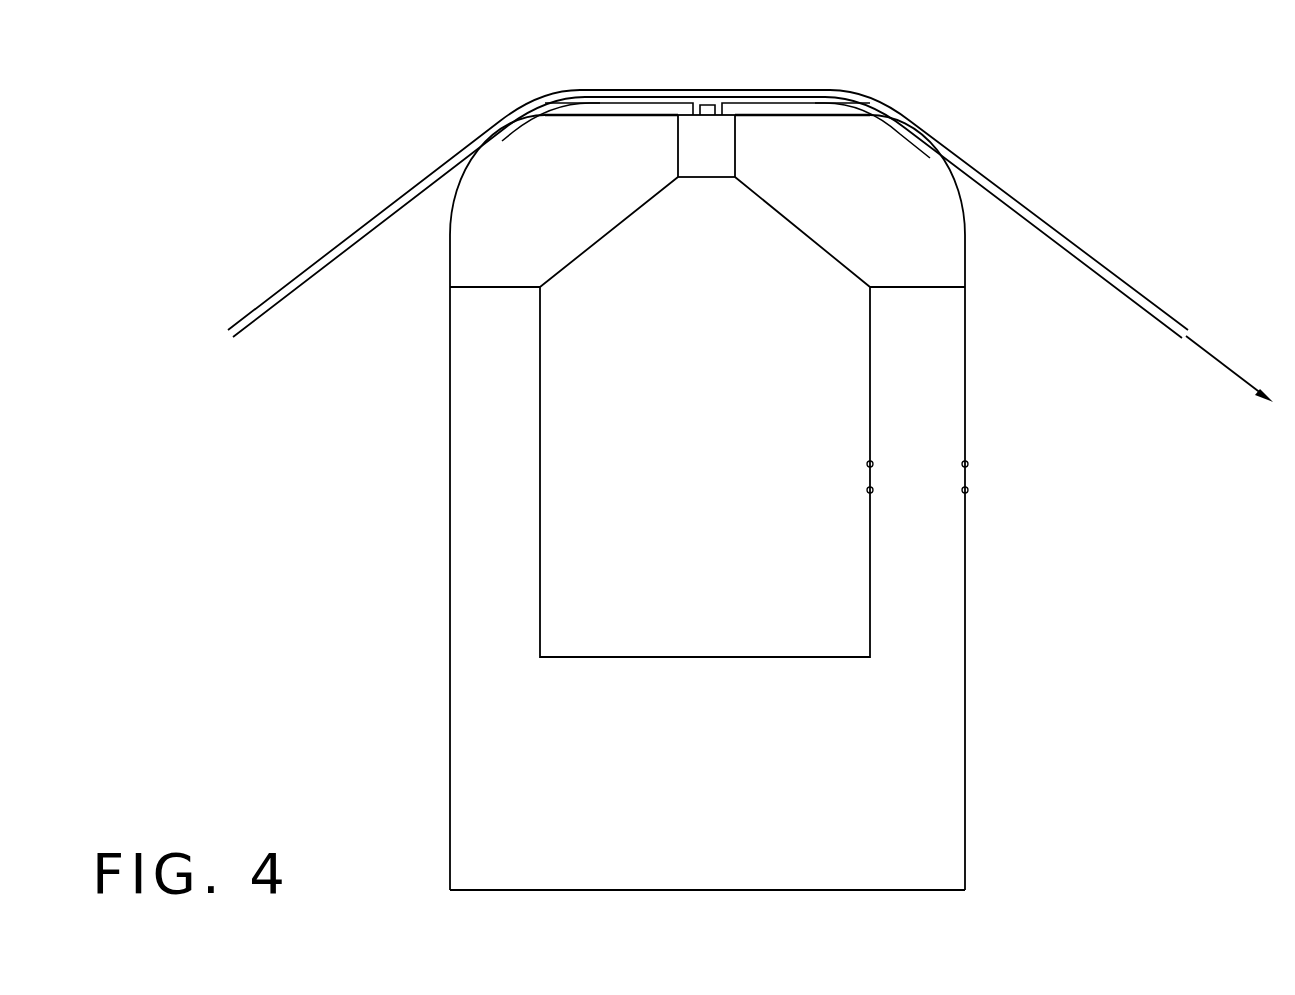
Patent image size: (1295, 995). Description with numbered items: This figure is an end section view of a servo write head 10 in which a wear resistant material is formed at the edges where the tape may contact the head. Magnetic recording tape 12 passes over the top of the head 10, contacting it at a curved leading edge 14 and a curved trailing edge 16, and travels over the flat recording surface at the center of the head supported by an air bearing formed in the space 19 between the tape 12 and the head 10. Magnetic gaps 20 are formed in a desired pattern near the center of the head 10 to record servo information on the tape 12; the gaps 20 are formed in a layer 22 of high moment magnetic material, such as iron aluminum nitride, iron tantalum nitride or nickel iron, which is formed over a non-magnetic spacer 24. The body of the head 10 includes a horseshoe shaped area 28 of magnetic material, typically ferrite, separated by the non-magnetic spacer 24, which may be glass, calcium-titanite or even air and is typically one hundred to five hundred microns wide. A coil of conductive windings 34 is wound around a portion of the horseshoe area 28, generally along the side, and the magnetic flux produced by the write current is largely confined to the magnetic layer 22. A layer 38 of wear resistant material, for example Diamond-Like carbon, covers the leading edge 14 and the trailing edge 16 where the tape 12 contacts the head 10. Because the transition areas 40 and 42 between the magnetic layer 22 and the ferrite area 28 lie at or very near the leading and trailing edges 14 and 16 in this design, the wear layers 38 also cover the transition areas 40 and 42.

The servo write head 10 is at (1000, 629).
The magnetic recording tape 12 is at (1084, 250).
The curved leading edge 14 is at (531, 124).
The curved trailing edge 16 is at (891, 128).
The space 19 is at (646, 102).
The magnetic gaps 20 is at (717, 104).
The layer of high moment magnetic material 22 is at (758, 114).
The non-magnetic spacer 24 is at (702, 179).
The horseshoe shaped area 28 is at (527, 335).
The coil of conductive windings 34 is at (968, 464).
The wear layer 38 is at (541, 99).
The transition area 40 is at (572, 116).
The transition area 42 is at (845, 116).